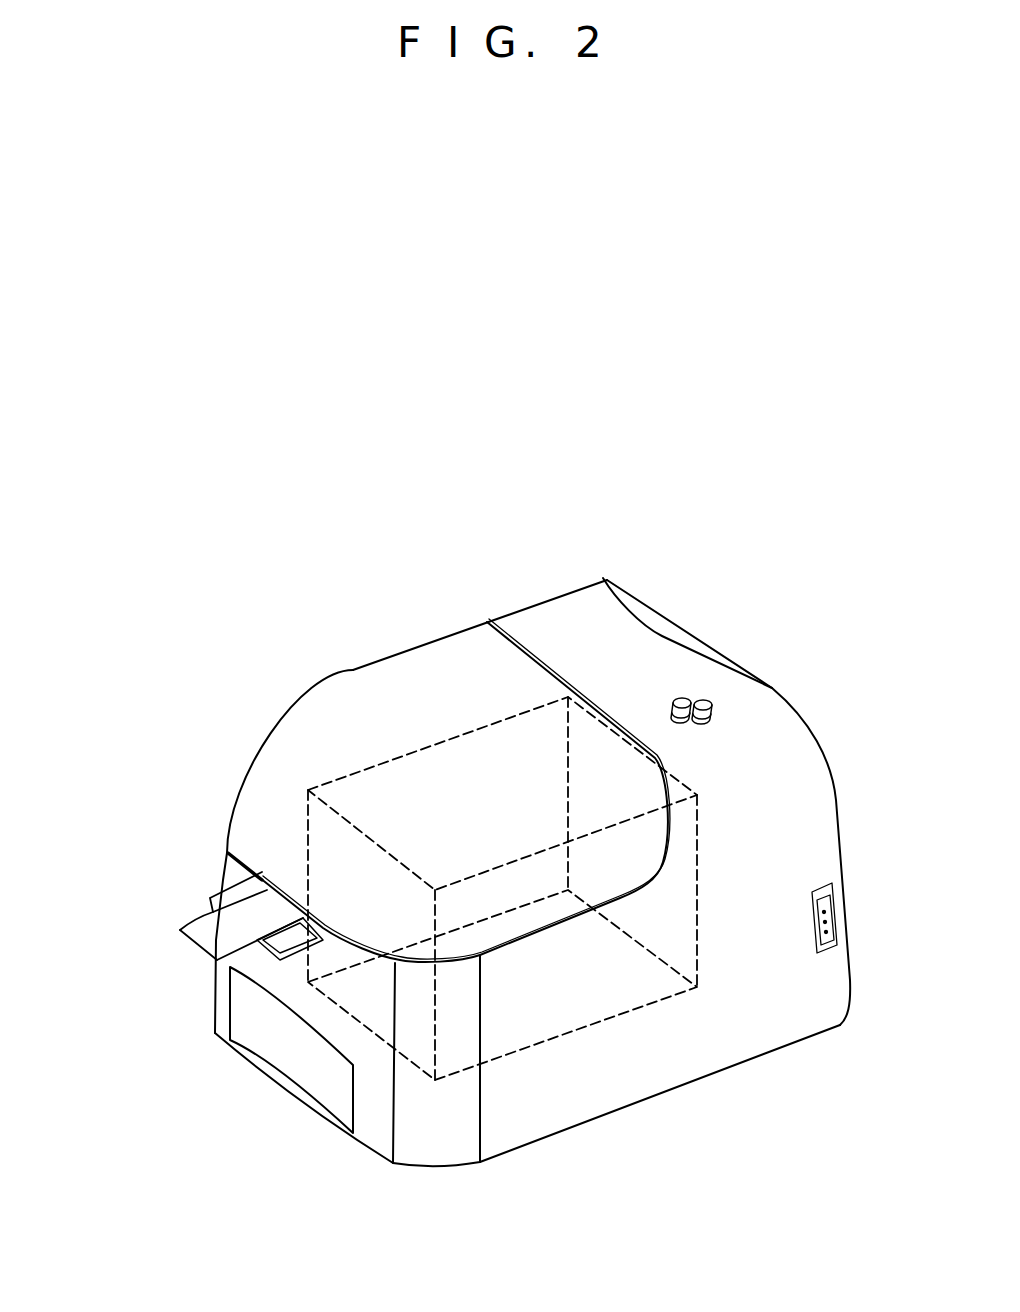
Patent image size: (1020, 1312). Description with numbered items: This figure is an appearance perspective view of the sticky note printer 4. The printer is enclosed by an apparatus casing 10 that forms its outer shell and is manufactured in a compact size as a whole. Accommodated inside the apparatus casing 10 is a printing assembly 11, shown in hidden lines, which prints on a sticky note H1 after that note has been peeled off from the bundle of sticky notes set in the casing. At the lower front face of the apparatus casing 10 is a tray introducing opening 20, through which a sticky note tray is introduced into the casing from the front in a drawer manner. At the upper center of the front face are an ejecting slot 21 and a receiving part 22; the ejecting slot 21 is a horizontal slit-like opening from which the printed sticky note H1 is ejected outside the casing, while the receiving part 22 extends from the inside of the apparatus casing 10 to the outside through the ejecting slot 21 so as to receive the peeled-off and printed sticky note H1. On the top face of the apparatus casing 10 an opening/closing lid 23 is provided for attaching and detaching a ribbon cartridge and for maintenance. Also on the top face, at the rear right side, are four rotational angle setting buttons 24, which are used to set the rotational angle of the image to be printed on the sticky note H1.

The sticky note printer 4 is at (459, 466).
The apparatus casing 10 is at (593, 620).
The printing assembly 11 is at (495, 720).
The tray introducing opening 20 is at (265, 1090).
The ejecting slot 21 is at (297, 915).
The receiving part 22 is at (210, 901).
The opening/closing lid 23 is at (355, 668).
The rotational angle setting buttons 24 is at (684, 698).
The sticky note H1 is at (183, 933).